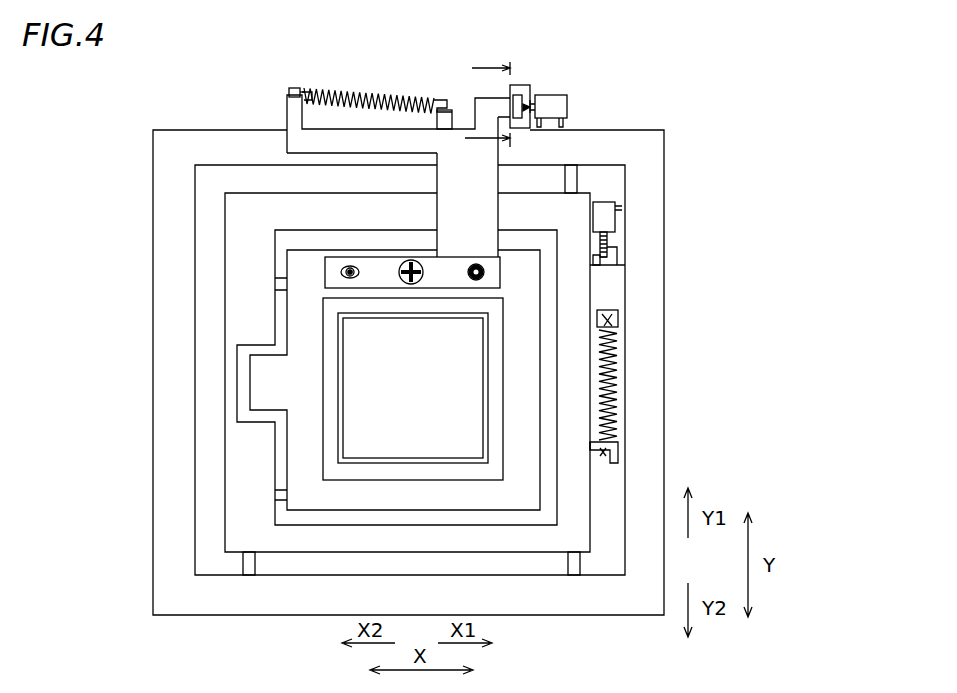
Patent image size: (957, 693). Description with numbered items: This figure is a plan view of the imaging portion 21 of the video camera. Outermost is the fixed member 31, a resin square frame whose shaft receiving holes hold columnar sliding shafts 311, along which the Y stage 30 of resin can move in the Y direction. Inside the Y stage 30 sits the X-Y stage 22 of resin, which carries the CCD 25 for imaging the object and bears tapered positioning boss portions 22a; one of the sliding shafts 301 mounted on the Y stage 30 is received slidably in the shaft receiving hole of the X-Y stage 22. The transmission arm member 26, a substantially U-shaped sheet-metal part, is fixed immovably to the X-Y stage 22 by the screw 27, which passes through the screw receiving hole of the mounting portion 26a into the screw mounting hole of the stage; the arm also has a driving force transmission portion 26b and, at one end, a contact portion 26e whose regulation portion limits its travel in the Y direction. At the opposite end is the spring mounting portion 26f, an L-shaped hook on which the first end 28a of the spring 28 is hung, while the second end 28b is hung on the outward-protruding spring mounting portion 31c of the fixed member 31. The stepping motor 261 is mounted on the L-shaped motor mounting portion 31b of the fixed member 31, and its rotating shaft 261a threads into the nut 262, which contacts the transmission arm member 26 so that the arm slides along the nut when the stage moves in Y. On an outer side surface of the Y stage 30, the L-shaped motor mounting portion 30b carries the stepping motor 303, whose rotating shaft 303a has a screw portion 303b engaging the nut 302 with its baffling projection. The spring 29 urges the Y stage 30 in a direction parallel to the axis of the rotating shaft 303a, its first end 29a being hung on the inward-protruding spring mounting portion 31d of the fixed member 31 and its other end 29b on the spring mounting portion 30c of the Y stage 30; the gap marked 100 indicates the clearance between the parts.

The imaging portion 21 is at (113, 140).
The X-Y stage 22 is at (305, 333).
The positioning boss portions 22a is at (348, 266).
The CCD 25 is at (398, 384).
The transmission arm member 26 is at (470, 180).
The mounting portion 26a is at (333, 267).
The driving force transmission portion 26b is at (486, 120).
The contact portion 26e is at (487, 117).
The spring mounting portion 26f is at (293, 88).
The screw 27 is at (409, 262).
The spring 28 is at (362, 96).
The first end 28a is at (308, 92).
The second end 28b is at (438, 108).
The spring 29 is at (615, 380).
The first end 29a is at (618, 463).
The spring end 29b is at (612, 321).
The Y stage 30 is at (247, 228).
The motor mounting portion 30b is at (625, 267).
The spring mounting portion 30c is at (618, 443).
The fixed member 31 is at (176, 200).
The motor mounting portion 31b is at (522, 85).
The spring mounting portion 31c is at (443, 104).
The spring mounting portion 31d is at (605, 311).
The gap 100 is at (489, 104).
The stepping motor 261 is at (568, 108).
The rotating shaft 261a is at (566, 97).
The nut 262 is at (532, 98).
The sliding shafts 301 is at (275, 284).
The nut 302 is at (624, 250).
The stepping motor 303 is at (607, 217).
The rotating shaft 303a is at (608, 239).
The screw portion 303b is at (610, 250).
The sliding shafts 311 is at (577, 180).